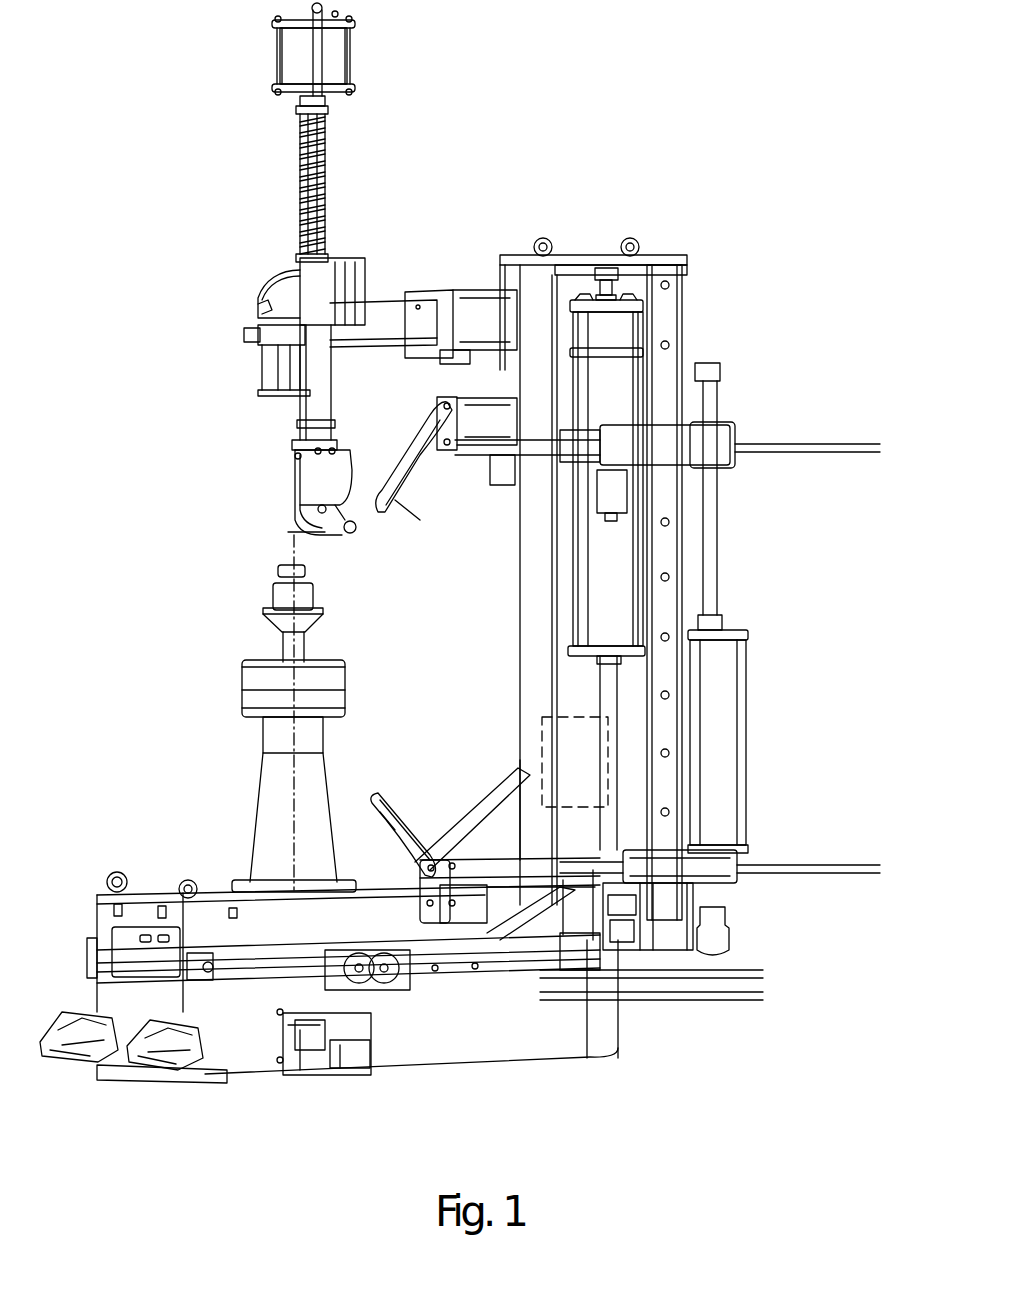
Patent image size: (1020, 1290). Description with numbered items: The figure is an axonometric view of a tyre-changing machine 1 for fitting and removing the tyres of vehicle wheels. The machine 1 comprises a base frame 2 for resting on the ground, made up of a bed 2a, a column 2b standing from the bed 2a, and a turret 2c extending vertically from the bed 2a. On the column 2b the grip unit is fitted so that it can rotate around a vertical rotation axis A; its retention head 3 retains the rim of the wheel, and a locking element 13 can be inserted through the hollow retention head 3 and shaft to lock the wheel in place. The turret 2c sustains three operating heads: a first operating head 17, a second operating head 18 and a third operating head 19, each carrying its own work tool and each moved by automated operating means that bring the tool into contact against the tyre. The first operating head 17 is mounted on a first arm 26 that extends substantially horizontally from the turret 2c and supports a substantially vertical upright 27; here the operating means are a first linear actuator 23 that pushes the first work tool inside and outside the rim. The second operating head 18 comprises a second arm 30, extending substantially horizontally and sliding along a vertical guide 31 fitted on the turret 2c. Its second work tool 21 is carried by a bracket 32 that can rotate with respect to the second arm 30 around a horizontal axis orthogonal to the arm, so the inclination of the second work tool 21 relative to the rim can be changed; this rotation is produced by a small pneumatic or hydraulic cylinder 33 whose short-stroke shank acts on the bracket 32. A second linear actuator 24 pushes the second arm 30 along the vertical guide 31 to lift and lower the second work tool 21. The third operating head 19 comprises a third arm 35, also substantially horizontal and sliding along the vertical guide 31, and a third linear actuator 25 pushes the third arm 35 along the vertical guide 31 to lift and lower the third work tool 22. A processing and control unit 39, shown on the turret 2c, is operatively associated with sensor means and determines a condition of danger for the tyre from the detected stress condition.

The tyre-changing machine 1 is at (790, 72).
The base frame 2 is at (635, 1078).
The bed 2a is at (237, 1027).
The column 2b is at (275, 805).
The turret 2c is at (532, 290).
The retention head 3 is at (258, 676).
The locking element 13 is at (280, 622).
The first operating head 17 is at (268, 460).
The second operating head 18 is at (440, 500).
The third operating head 19 is at (420, 790).
The second work tool 21 is at (413, 500).
The third work tool 22 is at (392, 810).
The first linear actuator 23 is at (300, 50).
The second linear actuator 24 is at (707, 690).
The third linear actuator 25 is at (612, 322).
The first arm 26 is at (385, 298).
The upright 27 is at (300, 405).
The second arm 30 is at (575, 465).
The vertical guide 31 is at (660, 618).
The bracket 32 is at (395, 475).
The small cylinder 33 is at (488, 395).
The third arm 35 is at (488, 820).
The processing and control unit 39 is at (572, 745).
The rotation axis A is at (272, 738).